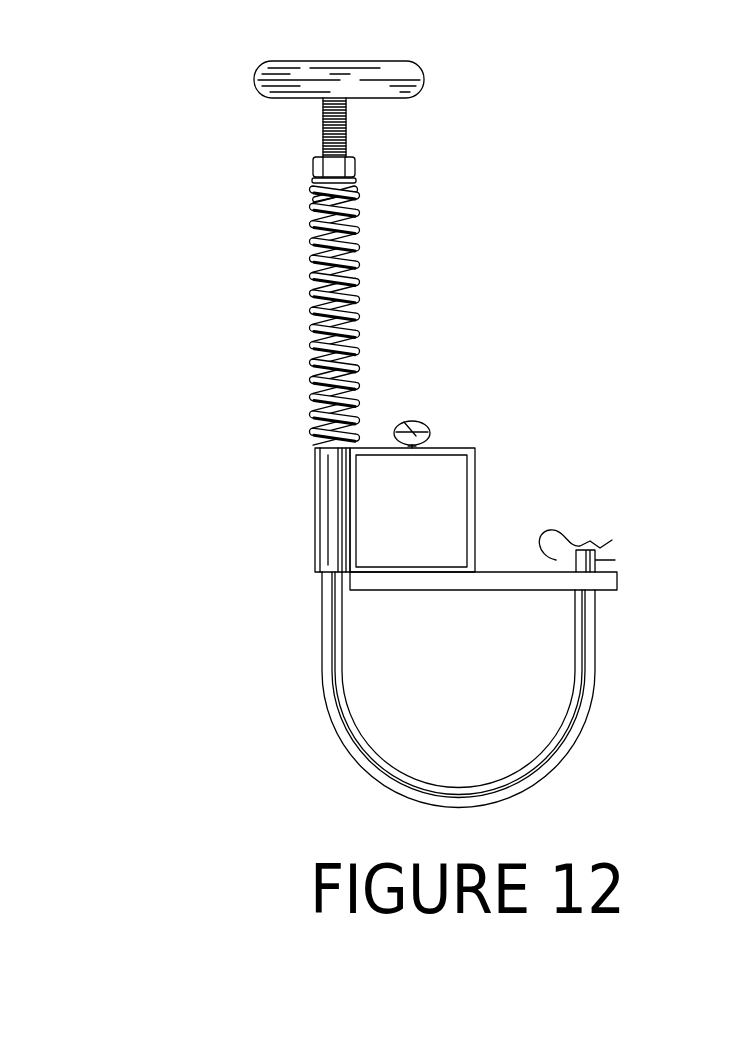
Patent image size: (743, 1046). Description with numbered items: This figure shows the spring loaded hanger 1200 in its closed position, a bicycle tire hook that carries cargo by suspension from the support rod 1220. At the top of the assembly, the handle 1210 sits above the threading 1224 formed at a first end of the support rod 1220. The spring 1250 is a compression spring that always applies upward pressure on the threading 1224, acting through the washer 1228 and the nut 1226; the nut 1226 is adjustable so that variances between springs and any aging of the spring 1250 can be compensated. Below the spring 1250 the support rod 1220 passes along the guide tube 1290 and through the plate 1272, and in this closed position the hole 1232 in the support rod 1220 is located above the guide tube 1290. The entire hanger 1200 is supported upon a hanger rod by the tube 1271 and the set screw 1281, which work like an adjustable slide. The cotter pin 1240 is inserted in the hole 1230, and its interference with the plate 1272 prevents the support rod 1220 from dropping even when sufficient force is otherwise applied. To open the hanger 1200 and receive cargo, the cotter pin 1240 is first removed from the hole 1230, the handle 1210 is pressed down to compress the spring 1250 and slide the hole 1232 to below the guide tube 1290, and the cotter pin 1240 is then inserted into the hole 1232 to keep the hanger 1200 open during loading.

The spring loaded hanger 1200 is at (577, 189).
The handle 1210 is at (418, 84).
The threading 1224 is at (347, 122).
The nut 1226 is at (356, 153).
The washer 1228 is at (354, 188).
The spring 1250 is at (358, 265).
The hole 1232 is at (318, 446).
The guide tube 1290 is at (327, 558).
The tube 1271 is at (470, 451).
The set screw 1281 is at (433, 420).
The plate 1272 is at (600, 582).
The hole 1230 is at (584, 546).
The cotter pin 1240 is at (556, 548).
The support rod 1220 is at (530, 778).